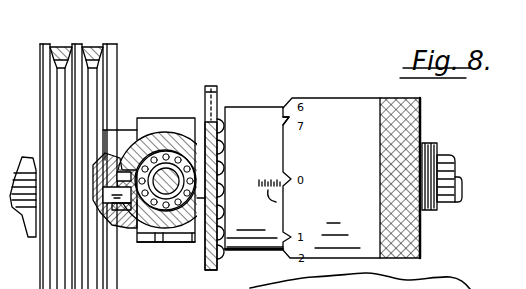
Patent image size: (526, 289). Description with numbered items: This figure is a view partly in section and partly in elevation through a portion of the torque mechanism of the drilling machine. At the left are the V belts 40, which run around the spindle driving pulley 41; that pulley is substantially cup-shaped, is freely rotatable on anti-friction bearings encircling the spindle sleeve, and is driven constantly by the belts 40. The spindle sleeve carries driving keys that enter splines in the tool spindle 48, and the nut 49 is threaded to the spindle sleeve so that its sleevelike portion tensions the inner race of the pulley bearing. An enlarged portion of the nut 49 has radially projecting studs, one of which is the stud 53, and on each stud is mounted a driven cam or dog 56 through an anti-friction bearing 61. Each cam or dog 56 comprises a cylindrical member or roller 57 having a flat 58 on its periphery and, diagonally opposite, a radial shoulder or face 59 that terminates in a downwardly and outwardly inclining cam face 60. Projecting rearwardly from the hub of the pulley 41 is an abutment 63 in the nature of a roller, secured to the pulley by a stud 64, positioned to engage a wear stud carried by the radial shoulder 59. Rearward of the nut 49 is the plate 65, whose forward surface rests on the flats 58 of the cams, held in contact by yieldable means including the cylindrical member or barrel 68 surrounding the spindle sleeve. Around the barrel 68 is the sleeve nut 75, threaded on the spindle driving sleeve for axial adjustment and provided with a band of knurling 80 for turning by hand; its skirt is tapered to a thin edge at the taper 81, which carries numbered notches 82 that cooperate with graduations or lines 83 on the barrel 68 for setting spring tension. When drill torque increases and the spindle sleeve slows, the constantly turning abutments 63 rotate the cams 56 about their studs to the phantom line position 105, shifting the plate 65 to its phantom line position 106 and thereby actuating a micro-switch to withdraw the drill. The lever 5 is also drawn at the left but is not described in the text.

The lever 5 is at (12, 207).
The V belts 40 is at (68, 46).
The spindle driving pulley 41 is at (118, 70).
The tool spindle 48 is at (450, 152).
The nut 49 is at (458, 166).
The stud 53 is at (160, 243).
The driven cam or dog 56 is at (168, 250).
The cylindrical member or roller 57 is at (165, 130).
The flat 58 is at (165, 245).
The radial shoulder or face 59 is at (152, 130).
The cam face 60 is at (137, 243).
The anti-friction bearing 61 is at (220, 176).
The abutment 63 is at (125, 232).
The stud 64 is at (110, 130).
The plate 65 is at (218, 88).
The cylindrical member or barrel 68 is at (268, 108).
The sleeve nut 75 is at (349, 104).
The band of knurling 80 is at (412, 118).
The taper 81 is at (293, 103).
The notches 82 is at (289, 175).
The graduations or lines 83 is at (278, 203).
The phantom line position 105 is at (204, 200).
The phantom line position 106 is at (222, 100).